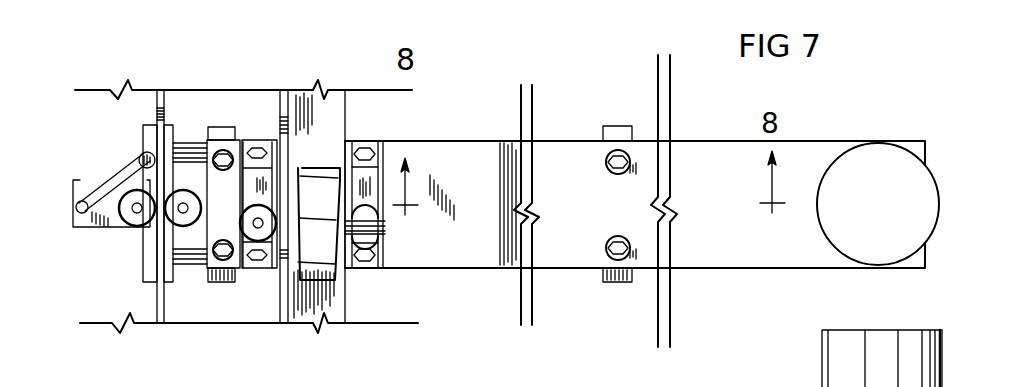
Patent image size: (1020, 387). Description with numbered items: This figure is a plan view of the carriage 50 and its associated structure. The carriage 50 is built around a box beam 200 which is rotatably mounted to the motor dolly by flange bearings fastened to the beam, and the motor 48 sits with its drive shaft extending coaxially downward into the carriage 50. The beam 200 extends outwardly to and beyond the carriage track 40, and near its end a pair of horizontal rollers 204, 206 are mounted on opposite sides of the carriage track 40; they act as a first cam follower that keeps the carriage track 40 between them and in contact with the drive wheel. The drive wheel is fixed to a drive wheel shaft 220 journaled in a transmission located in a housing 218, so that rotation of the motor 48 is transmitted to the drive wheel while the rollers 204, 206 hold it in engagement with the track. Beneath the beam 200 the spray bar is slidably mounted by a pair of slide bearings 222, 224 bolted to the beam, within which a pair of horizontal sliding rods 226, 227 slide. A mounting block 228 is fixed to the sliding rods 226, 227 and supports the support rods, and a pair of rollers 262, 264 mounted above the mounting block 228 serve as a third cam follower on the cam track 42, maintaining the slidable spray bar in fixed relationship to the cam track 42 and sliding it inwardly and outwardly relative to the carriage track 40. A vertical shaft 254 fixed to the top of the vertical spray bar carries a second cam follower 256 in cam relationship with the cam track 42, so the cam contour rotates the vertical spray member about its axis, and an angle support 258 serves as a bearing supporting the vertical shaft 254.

The carriage track 40 is at (328, 138).
The cam track 42 is at (160, 90).
The motor 48 is at (863, 172).
The carriage 50 is at (568, 167).
The box beam 200 is at (237, 255).
The horizontal roller 204 is at (375, 197).
The horizontal roller 206 is at (262, 252).
The housing 218 is at (472, 163).
The drive wheel shaft 220 is at (383, 230).
The slide bearing 222 is at (223, 281).
The slide bearing 224 is at (615, 283).
The horizontal sliding rod 226 is at (197, 147).
The horizontal sliding rod 227 is at (197, 262).
The mounting block 228 is at (151, 267).
The vertical shaft 254 is at (83, 214).
The second cam follower 256 is at (140, 155).
The angle support 258 is at (92, 185).
The roller 262 is at (130, 218).
The roller 264 is at (192, 157).